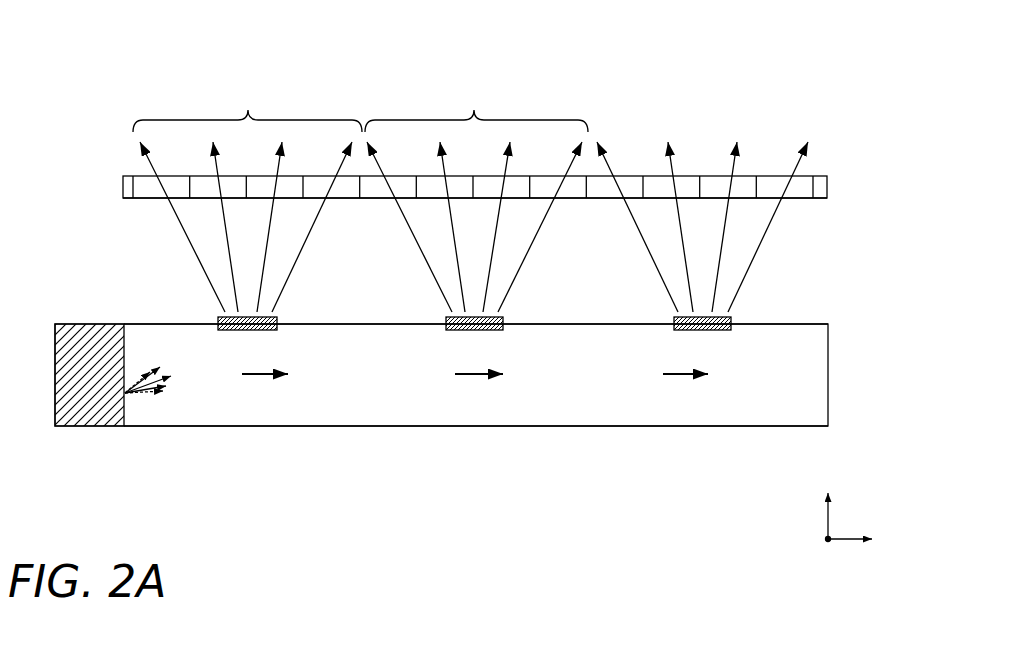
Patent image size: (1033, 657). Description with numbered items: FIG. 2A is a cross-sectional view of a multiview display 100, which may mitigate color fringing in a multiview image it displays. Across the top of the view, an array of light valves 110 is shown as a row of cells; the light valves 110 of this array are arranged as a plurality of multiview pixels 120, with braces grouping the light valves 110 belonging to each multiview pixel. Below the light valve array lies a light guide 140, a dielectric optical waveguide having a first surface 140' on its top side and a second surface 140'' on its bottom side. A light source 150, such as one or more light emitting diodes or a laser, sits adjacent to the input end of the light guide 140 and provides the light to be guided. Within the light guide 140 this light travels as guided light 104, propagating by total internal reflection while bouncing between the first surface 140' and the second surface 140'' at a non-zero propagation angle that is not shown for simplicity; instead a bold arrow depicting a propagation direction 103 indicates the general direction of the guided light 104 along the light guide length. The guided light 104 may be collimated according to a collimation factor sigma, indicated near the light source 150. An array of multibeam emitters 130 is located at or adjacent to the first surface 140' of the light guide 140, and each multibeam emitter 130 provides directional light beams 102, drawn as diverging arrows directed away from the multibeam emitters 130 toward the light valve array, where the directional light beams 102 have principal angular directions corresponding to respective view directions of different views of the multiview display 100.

The multiview display 100 is at (806, 50).
The directional light beams 102 is at (832, 219).
The propagation direction 103 is at (478, 395).
The guided light 104 is at (157, 401).
The light valves 110 is at (110, 181).
The multiview pixels 120 is at (192, 82).
The multibeam emitters 130 is at (209, 300).
The light guide 140 is at (490, 376).
The first surface 140' is at (516, 305).
The second surface 140'' is at (519, 446).
The light source 150 is at (89, 440).